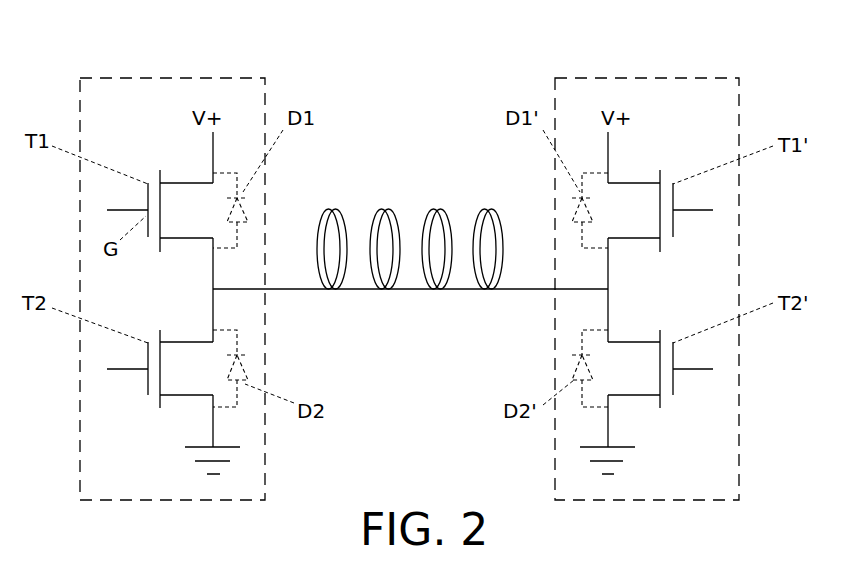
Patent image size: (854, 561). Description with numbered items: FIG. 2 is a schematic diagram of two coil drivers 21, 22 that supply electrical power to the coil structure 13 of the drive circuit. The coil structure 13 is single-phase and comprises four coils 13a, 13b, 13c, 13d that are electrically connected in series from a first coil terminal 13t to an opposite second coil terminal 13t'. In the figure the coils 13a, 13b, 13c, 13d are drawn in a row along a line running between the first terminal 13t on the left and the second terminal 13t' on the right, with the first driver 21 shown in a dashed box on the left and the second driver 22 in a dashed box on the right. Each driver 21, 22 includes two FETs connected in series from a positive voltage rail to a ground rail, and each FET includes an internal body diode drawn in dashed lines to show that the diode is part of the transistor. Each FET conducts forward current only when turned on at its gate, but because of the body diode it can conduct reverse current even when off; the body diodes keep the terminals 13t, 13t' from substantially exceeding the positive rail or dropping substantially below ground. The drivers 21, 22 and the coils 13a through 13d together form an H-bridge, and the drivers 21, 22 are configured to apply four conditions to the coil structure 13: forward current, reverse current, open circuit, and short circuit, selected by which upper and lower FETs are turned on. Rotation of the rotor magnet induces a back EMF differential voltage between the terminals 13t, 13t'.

The coil driver 21 is at (161, 78).
The coil driver 22 is at (640, 78).
The coil structure 13 is at (410, 213).
The coil 13a is at (334, 209).
The coil 13b is at (386, 209).
The coil 13c is at (438, 209).
The coil 13d is at (493, 209).
The first coil terminal 13t is at (311, 314).
The second coil terminal 13t' is at (509, 314).